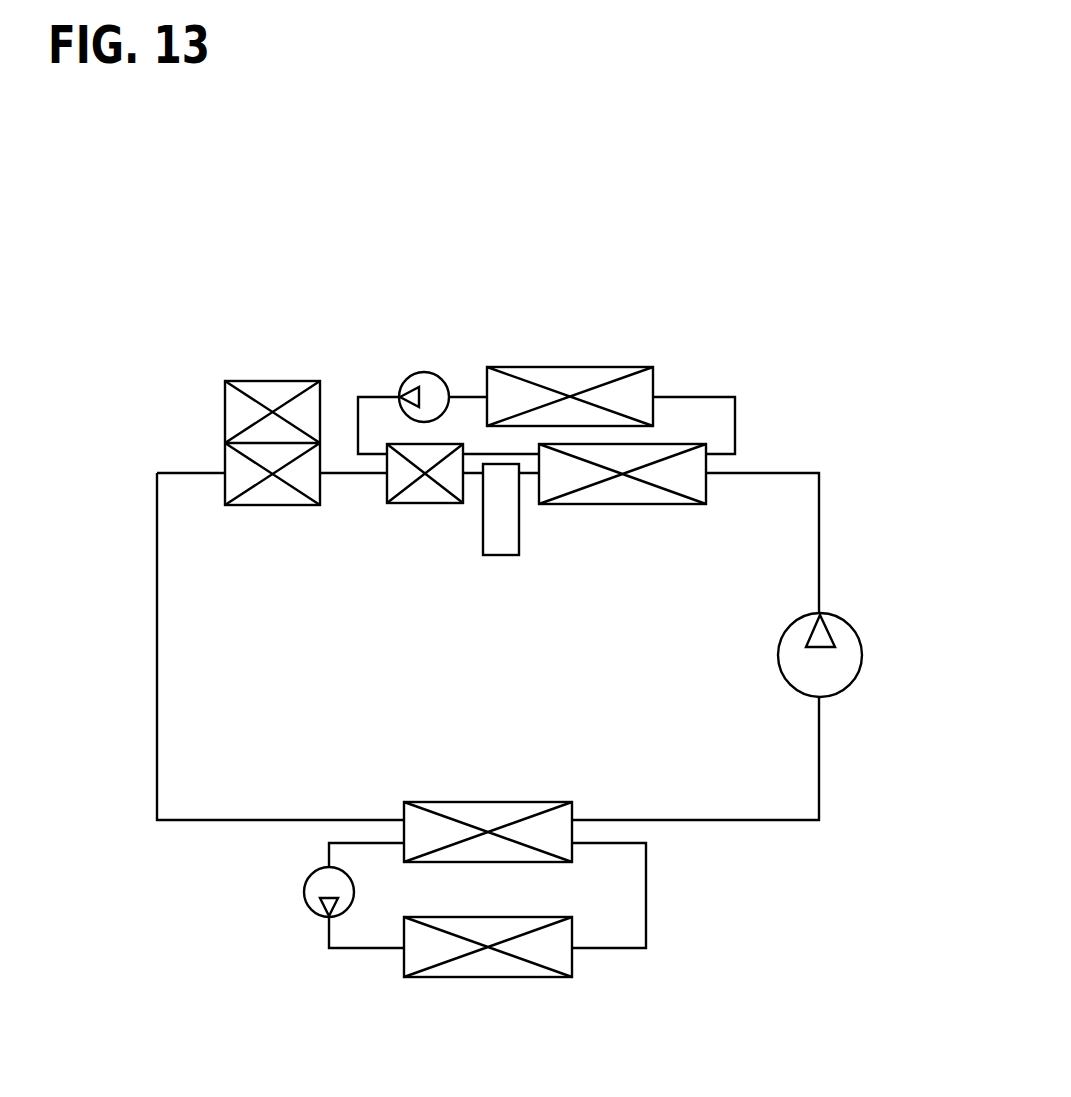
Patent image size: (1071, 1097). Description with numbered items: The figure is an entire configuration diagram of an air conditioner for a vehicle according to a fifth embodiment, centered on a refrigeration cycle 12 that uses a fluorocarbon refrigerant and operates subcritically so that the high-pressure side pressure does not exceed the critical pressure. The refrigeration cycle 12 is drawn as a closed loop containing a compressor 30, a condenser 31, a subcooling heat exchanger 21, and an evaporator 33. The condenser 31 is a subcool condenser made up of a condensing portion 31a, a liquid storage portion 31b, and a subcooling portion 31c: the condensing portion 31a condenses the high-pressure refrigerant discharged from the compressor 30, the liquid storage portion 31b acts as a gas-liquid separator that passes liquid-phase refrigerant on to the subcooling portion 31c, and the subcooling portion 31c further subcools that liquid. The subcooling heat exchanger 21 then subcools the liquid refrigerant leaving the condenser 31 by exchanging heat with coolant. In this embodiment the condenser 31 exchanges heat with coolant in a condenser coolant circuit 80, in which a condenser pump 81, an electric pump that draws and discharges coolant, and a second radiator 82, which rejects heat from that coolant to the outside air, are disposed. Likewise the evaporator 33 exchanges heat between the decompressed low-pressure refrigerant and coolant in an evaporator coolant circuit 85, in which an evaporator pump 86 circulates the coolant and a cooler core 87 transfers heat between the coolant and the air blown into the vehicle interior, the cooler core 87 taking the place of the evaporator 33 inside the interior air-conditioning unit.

The refrigeration cycle 12 is at (153, 628).
The subcooling heat exchanger 21 is at (273, 381).
The compressor 30 is at (862, 652).
The condenser 31 is at (546, 552).
The condensing portion 31a is at (588, 504).
The liquid storage portion 31b is at (497, 555).
The subcooling portion 31c is at (425, 531).
The evaporator 33 is at (485, 802).
The condenser coolant circuit 80 is at (708, 394).
The condenser pump 81 is at (420, 373).
The second radiator 82 is at (572, 367).
The evaporator coolant circuit 85 is at (650, 893).
The evaporator pump 86 is at (304, 893).
The cooler core 87 is at (488, 977).